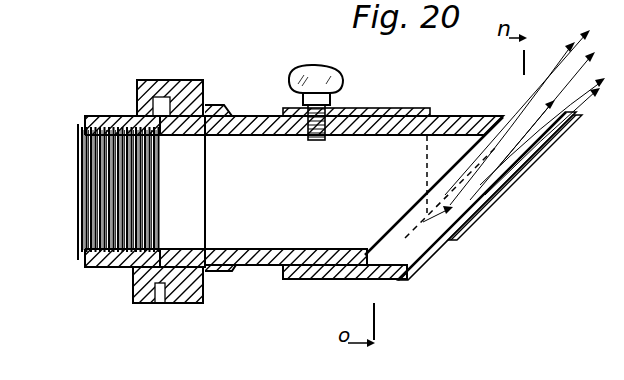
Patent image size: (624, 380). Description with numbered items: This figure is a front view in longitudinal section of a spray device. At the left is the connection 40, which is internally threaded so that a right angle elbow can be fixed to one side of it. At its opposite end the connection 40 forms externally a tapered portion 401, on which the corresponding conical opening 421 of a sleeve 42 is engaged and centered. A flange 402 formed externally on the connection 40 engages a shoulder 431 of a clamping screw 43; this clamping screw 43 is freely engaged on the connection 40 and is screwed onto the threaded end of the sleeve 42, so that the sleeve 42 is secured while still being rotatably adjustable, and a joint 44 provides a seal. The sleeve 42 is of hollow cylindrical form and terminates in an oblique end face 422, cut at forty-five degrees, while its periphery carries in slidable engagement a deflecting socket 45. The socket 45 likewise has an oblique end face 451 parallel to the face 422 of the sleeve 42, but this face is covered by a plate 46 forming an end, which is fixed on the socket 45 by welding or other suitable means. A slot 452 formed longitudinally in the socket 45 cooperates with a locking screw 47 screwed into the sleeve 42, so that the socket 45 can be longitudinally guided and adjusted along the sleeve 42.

The connection 40 is at (103, 117).
The tapered portion 401 is at (176, 266).
The flange 402 is at (135, 264).
The sleeve 42 is at (245, 264).
The conical opening 421 is at (208, 106).
The oblique end face 422 is at (386, 248).
The clamping screw 43 is at (138, 268).
The shoulder 431 is at (138, 106).
The joint 44 is at (159, 300).
The deflecting socket 45 is at (303, 278).
The oblique end face 451 is at (455, 240).
The slot 452 is at (353, 109).
The plate 46 is at (436, 242).
The locking screw 47 is at (290, 86).